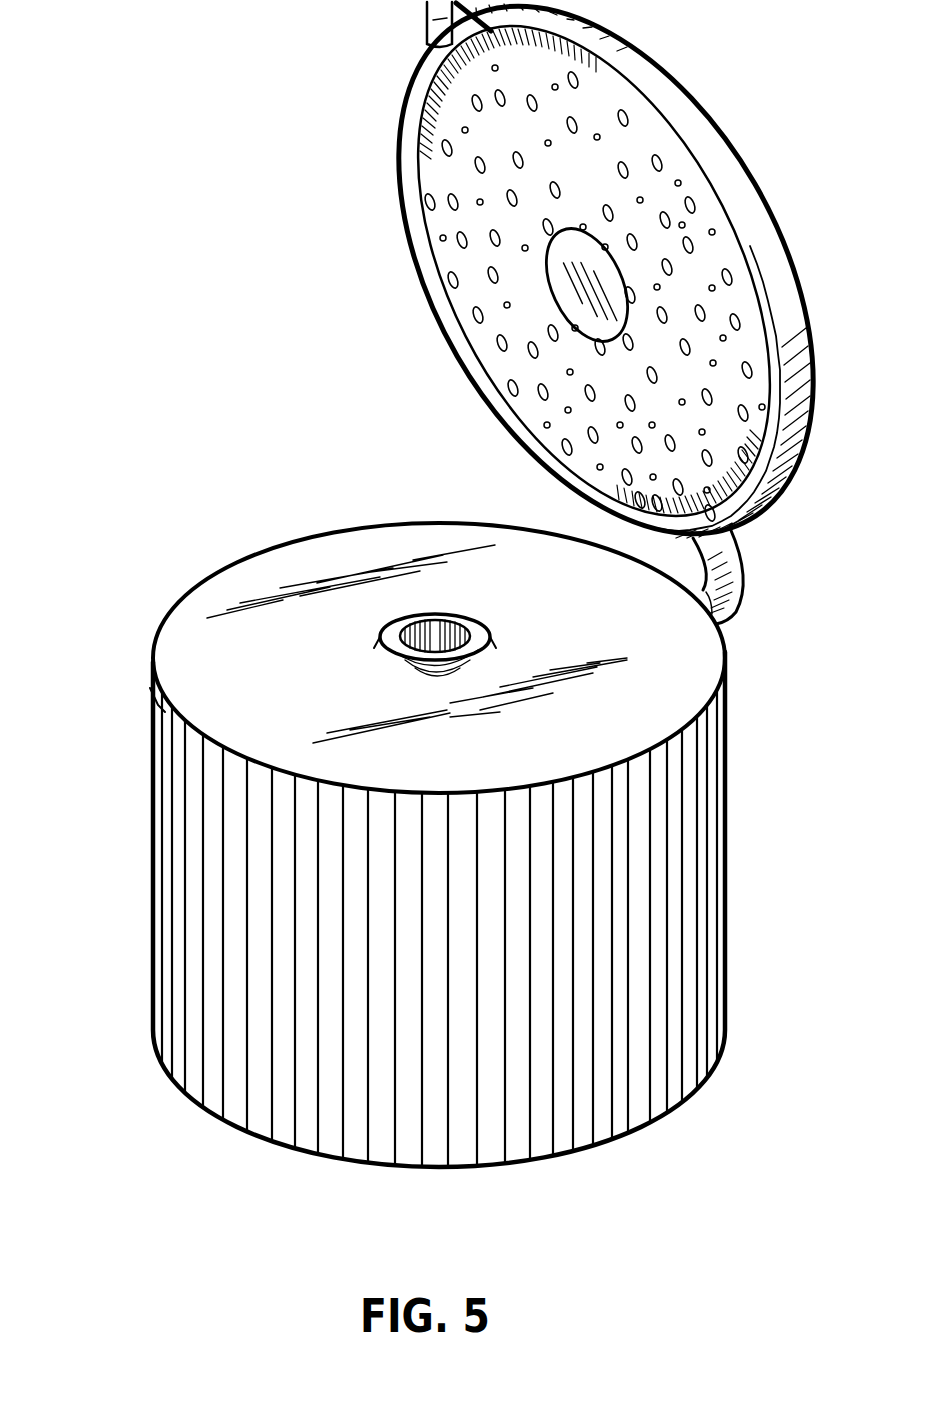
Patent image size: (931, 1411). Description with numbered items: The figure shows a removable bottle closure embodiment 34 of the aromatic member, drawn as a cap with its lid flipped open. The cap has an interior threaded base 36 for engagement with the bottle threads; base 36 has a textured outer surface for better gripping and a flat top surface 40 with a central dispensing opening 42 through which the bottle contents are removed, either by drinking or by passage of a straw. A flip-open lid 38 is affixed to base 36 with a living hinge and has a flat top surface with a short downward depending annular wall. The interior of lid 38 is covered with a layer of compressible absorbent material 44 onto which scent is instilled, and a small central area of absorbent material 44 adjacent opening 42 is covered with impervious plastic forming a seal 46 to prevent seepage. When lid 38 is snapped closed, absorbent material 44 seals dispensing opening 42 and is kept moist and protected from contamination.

The embodiment 34 is at (234, 329).
The base 36 is at (240, 1050).
The lid 38 is at (705, 116).
The top surface 40 is at (255, 588).
The dispensing opening 42 is at (430, 632).
The absorbent material 44 is at (460, 173).
The seal 46 is at (565, 283).